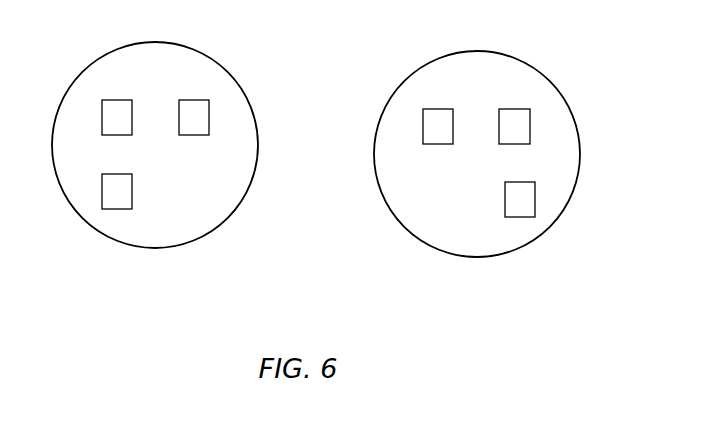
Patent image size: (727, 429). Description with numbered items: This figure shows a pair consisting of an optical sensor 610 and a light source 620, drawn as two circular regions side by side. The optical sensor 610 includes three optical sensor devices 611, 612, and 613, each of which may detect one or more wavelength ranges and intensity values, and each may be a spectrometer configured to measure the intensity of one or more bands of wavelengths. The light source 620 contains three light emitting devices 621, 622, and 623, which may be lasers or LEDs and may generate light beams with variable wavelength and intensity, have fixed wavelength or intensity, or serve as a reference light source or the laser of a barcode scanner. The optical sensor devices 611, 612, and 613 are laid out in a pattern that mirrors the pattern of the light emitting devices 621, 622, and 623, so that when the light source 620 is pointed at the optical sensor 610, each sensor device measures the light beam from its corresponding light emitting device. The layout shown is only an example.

The optical sensor 610 is at (225, 65).
The optical sensor device 611 is at (117, 100).
The optical sensor device 612 is at (192, 100).
The optical sensor device 613 is at (117, 174).
The light source 620 is at (545, 73).
The light emitting device 621 is at (439, 109).
The light emitting device 622 is at (513, 109).
The light emitting device 623 is at (510, 182).